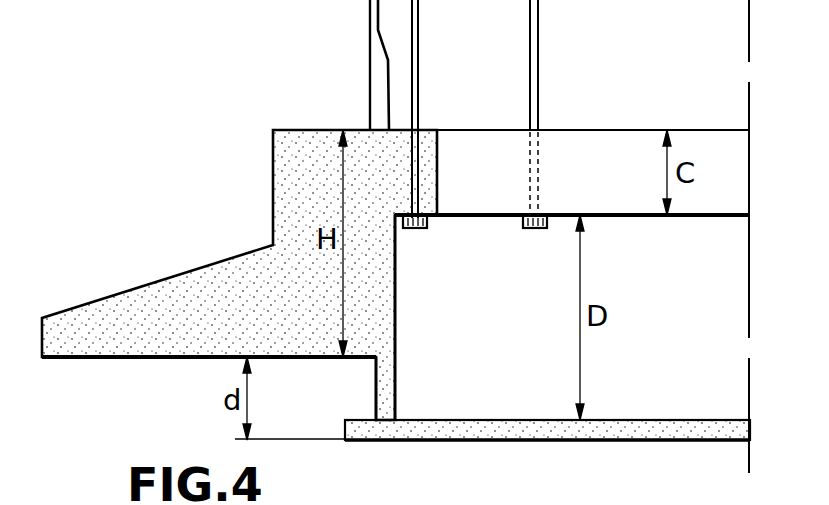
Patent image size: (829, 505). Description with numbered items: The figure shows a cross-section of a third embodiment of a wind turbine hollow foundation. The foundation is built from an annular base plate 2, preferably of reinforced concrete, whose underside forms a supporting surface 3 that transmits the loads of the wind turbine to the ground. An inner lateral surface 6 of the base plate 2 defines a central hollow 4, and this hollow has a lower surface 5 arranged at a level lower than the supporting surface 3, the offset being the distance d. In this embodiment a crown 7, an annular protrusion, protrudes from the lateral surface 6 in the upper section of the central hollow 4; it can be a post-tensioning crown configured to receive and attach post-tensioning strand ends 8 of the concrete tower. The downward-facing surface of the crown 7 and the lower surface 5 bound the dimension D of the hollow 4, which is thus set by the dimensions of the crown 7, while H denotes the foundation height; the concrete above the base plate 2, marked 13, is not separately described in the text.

The annular base plate 2 is at (243, 321).
The supporting surface 3 is at (152, 364).
The central hollow 4 is at (686, 341).
The lower surface 5 is at (495, 428).
The inner lateral surface 6 is at (396, 300).
The crown 7 is at (624, 155).
The post-tensioning strand end 8 is at (418, 229).
The concrete block / pedestal 13 is at (315, 130).